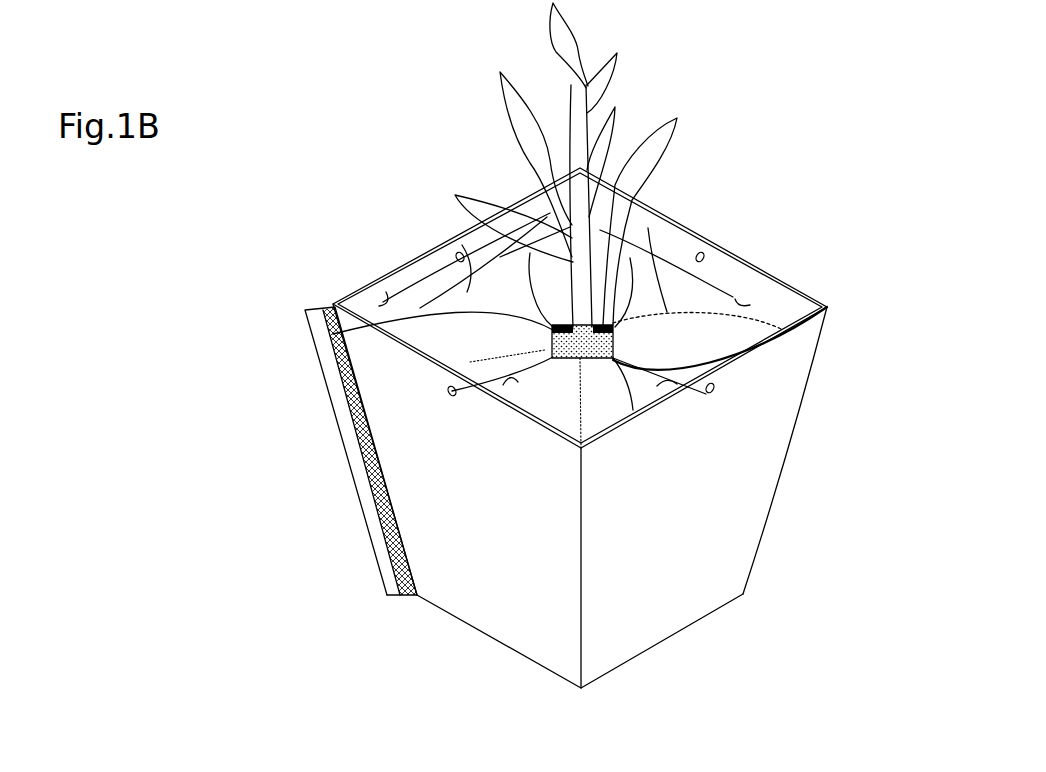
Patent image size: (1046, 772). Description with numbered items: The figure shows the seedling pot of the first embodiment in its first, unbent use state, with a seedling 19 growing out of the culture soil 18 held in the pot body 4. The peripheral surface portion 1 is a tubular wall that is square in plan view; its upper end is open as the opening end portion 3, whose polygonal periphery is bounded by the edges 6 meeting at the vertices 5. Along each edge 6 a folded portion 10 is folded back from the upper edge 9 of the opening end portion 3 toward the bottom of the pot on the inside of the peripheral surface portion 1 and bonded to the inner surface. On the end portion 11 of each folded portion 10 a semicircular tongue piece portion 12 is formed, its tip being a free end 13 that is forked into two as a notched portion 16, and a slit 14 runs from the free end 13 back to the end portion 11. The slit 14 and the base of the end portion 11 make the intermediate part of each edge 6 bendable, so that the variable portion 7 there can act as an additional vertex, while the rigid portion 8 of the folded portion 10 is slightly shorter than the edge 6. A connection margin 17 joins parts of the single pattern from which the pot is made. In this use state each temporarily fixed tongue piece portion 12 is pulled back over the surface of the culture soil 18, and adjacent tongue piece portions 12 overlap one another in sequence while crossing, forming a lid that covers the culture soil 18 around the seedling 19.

The peripheral surface portion 1 is at (590, 466).
The opening end portion 3 is at (408, 277).
The pot body 4 is at (745, 600).
The vertices 5 is at (333, 303).
The edge 6 is at (569, 261).
The variable portion 7 is at (515, 310).
The rigid portion 8 is at (383, 301).
The upper edge 9 is at (569, 261).
The folded portion 10 is at (562, 278).
The end portion 11 is at (420, 313).
The tongue piece portion 12 is at (468, 343).
The free end 13 is at (523, 505).
The slit 14 is at (461, 251).
The notched portion 16 is at (572, 356).
The connection margin 17 is at (377, 540).
The culture soil 18 is at (645, 193).
The seedling 19 is at (622, 102).